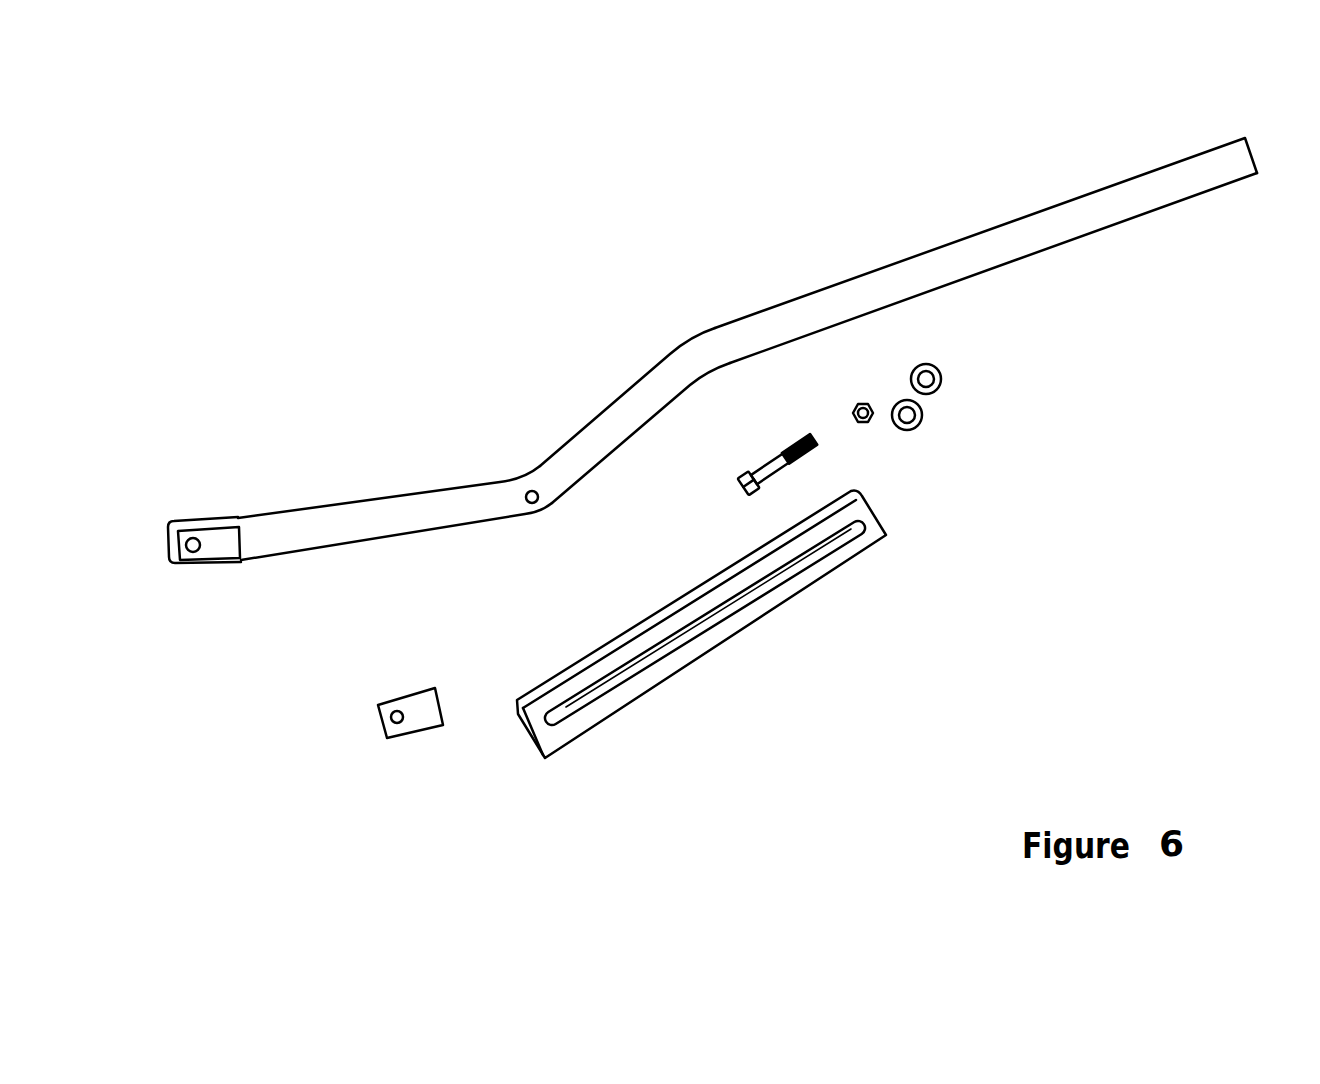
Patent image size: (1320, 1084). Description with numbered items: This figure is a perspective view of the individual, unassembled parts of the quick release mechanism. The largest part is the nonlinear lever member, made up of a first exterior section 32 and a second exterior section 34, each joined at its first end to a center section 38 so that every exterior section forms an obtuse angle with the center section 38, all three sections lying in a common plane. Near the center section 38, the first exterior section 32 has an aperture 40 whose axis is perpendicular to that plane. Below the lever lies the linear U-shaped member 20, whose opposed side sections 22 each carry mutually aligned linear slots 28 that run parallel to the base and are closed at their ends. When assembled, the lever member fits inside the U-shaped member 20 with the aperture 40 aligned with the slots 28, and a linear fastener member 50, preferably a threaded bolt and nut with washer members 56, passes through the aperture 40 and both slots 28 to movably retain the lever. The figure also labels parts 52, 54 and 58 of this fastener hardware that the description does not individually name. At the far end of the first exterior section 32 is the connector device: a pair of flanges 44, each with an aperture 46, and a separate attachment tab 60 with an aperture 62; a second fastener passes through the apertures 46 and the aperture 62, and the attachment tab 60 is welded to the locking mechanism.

The linear U-shaped member 20 is at (792, 652).
The opposed side sections 22 is at (868, 542).
The linear slots 28 is at (572, 708).
The first exterior section 32 is at (377, 515).
The second exterior section 34 is at (873, 297).
The center section 38 is at (605, 442).
The aperture 40 is at (531, 490).
The flanges 44 is at (183, 522).
The aperture 46 is at (193, 550).
The linear fastener member 50 is at (747, 469).
The bolt head 52 is at (738, 490).
The threaded portion 54 is at (797, 440).
The washer members 56 is at (923, 415).
The nut 58 is at (863, 424).
The attachment tab 60 is at (421, 690).
The aperture 62 is at (392, 721).